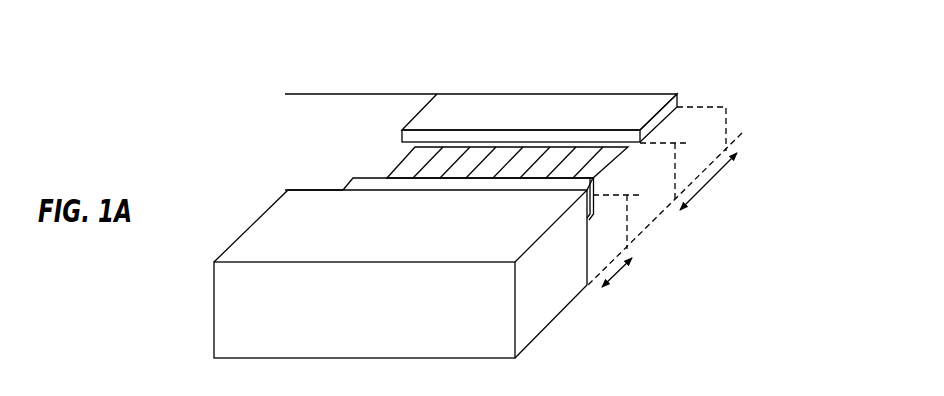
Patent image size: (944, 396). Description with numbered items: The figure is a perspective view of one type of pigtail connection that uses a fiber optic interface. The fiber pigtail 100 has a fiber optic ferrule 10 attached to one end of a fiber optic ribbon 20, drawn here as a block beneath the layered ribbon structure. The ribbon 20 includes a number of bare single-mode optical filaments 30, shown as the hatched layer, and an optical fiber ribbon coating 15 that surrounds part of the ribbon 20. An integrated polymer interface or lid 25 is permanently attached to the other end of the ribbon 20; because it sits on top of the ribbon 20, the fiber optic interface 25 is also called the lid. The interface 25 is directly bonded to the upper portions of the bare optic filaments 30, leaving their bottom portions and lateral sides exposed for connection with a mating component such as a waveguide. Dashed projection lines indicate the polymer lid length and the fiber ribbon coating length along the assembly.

The fiber pigtail 100 is at (222, 101).
The fiber optic ferrule 10 is at (225, 310).
The fiber optic ribbon 20 is at (285, 94).
The optical fiber ribbon coating 15 is at (352, 186).
The bare single-mode optical filaments 30 is at (413, 162).
The fiber optic interface 25 is at (422, 122).